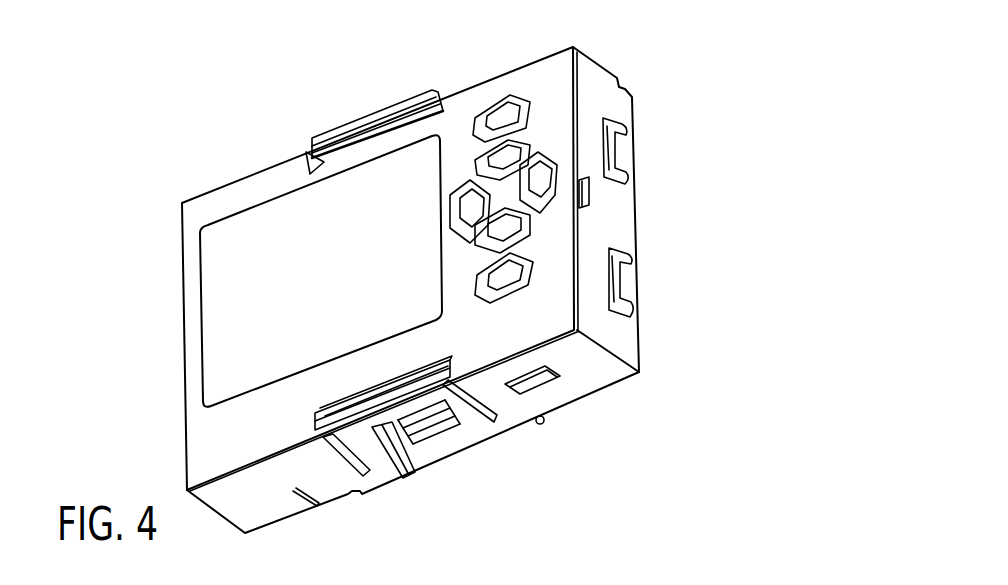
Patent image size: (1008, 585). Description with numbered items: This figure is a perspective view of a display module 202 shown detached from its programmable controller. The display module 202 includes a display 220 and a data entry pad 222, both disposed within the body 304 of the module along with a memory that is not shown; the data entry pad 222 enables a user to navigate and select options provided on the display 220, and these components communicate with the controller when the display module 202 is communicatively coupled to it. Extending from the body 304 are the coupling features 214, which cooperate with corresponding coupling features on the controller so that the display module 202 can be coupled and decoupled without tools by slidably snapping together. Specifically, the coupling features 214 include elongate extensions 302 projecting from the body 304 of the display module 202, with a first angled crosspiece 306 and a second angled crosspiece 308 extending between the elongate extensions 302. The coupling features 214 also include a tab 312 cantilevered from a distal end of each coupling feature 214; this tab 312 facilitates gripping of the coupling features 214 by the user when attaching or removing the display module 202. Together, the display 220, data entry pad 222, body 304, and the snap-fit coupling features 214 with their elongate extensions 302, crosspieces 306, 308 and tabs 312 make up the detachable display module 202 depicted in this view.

The display module 202 is at (652, 60).
The coupling features 214 is at (405, 88).
The display 220 is at (243, 229).
The data entry pad 222 is at (548, 205).
The elongate extensions 302 is at (468, 422).
The body 304 is at (584, 374).
The first angled crosspiece 306 is at (464, 448).
The second angled crosspiece 308 is at (407, 428).
The tab 312 is at (331, 136).